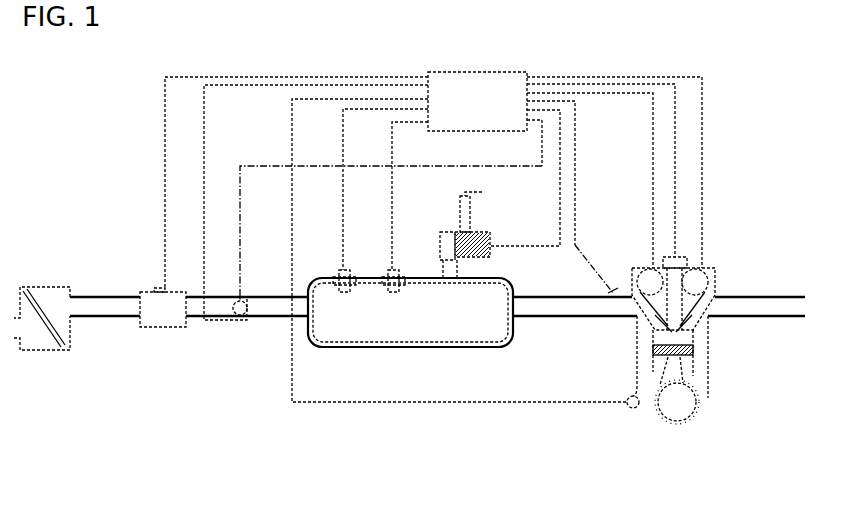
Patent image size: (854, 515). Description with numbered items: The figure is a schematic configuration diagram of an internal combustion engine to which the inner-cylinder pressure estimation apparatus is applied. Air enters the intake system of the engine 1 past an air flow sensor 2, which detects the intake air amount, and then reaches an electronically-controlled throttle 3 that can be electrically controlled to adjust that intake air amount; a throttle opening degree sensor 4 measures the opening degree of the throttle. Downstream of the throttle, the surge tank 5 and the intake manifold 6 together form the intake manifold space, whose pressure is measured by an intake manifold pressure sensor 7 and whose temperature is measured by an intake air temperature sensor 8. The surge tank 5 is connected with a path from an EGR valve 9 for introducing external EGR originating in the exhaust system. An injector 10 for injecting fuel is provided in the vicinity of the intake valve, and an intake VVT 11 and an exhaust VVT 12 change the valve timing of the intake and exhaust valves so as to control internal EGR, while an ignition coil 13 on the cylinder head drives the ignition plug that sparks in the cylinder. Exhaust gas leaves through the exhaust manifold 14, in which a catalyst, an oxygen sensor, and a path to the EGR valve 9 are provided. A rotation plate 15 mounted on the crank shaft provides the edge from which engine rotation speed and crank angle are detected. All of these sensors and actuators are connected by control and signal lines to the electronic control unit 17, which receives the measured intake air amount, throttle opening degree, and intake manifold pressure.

The engine 1 is at (667, 324).
The air flow sensor 2 is at (145, 282).
The electronically-controlled throttle 3 is at (256, 271).
The throttle opening degree sensor 4 is at (219, 338).
The surge tank 5 is at (410, 331).
The intake manifold 6 is at (575, 333).
The intake manifold pressure sensor 7 is at (354, 257).
The intake air temperature sensor 8 is at (405, 257).
The EGR valve 9 is at (490, 238).
The injector 10 is at (641, 361).
The intake VVT 11 is at (627, 244).
The exhaust VVT 12 is at (725, 248).
The ignition coil 13 is at (699, 221).
The exhaust manifold 14 is at (756, 285).
The rotation plate 15 is at (667, 401).
The electronic control unit 17 is at (477, 118).